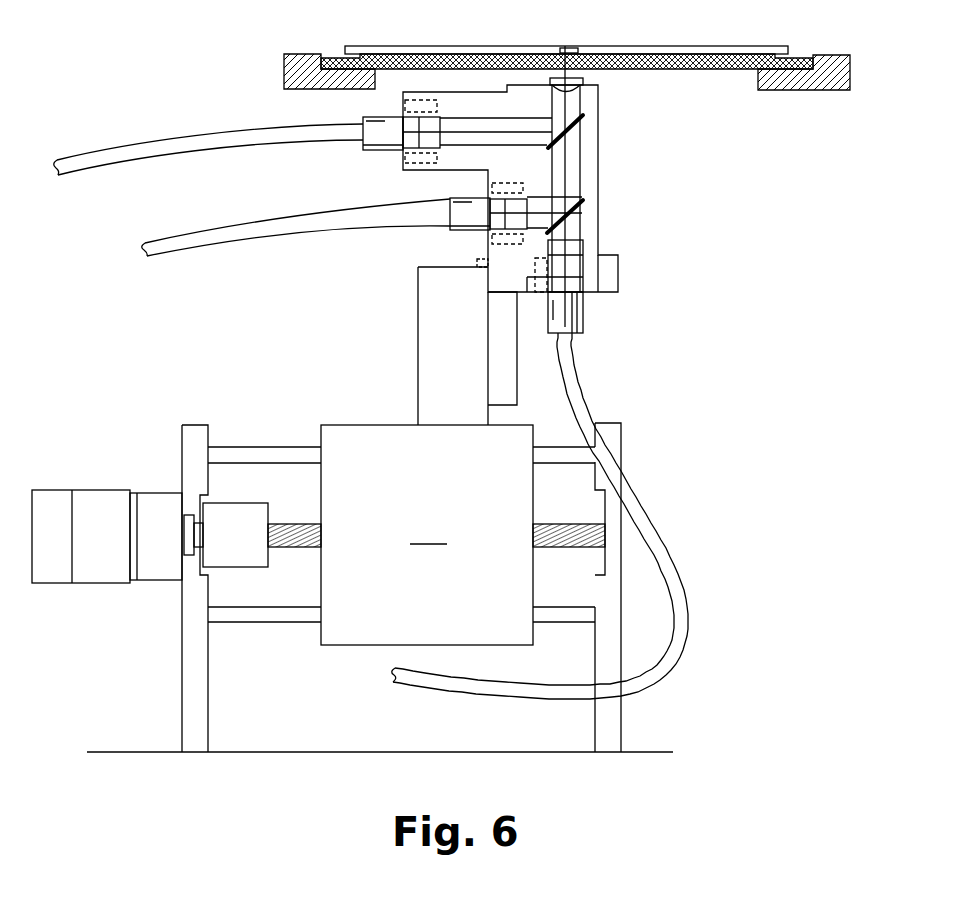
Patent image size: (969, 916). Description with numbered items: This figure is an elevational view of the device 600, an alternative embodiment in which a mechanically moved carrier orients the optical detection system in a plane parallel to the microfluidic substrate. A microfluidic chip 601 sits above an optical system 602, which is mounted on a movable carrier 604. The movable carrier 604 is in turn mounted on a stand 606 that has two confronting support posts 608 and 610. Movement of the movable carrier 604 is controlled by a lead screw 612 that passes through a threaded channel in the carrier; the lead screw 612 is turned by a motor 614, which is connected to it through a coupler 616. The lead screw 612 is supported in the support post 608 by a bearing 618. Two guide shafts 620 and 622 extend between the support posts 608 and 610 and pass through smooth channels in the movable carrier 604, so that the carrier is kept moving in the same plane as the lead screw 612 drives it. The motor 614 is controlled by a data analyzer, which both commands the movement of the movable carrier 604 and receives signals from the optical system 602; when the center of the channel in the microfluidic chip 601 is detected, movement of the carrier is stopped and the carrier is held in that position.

The device 600 is at (714, 310).
The microfluidic chip 601 is at (645, 52).
The optical system 602 is at (596, 161).
The movable carrier 604 is at (427, 452).
The stand 606 is at (578, 749).
The support post 608 is at (619, 717).
The support post 610 is at (183, 684).
The lead screw 612 is at (295, 518).
The motor 614 is at (57, 578).
The coupler 616 is at (238, 567).
The bearing 618 is at (622, 451).
The guide shaft 620 is at (258, 617).
The guide shaft 622 is at (235, 449).